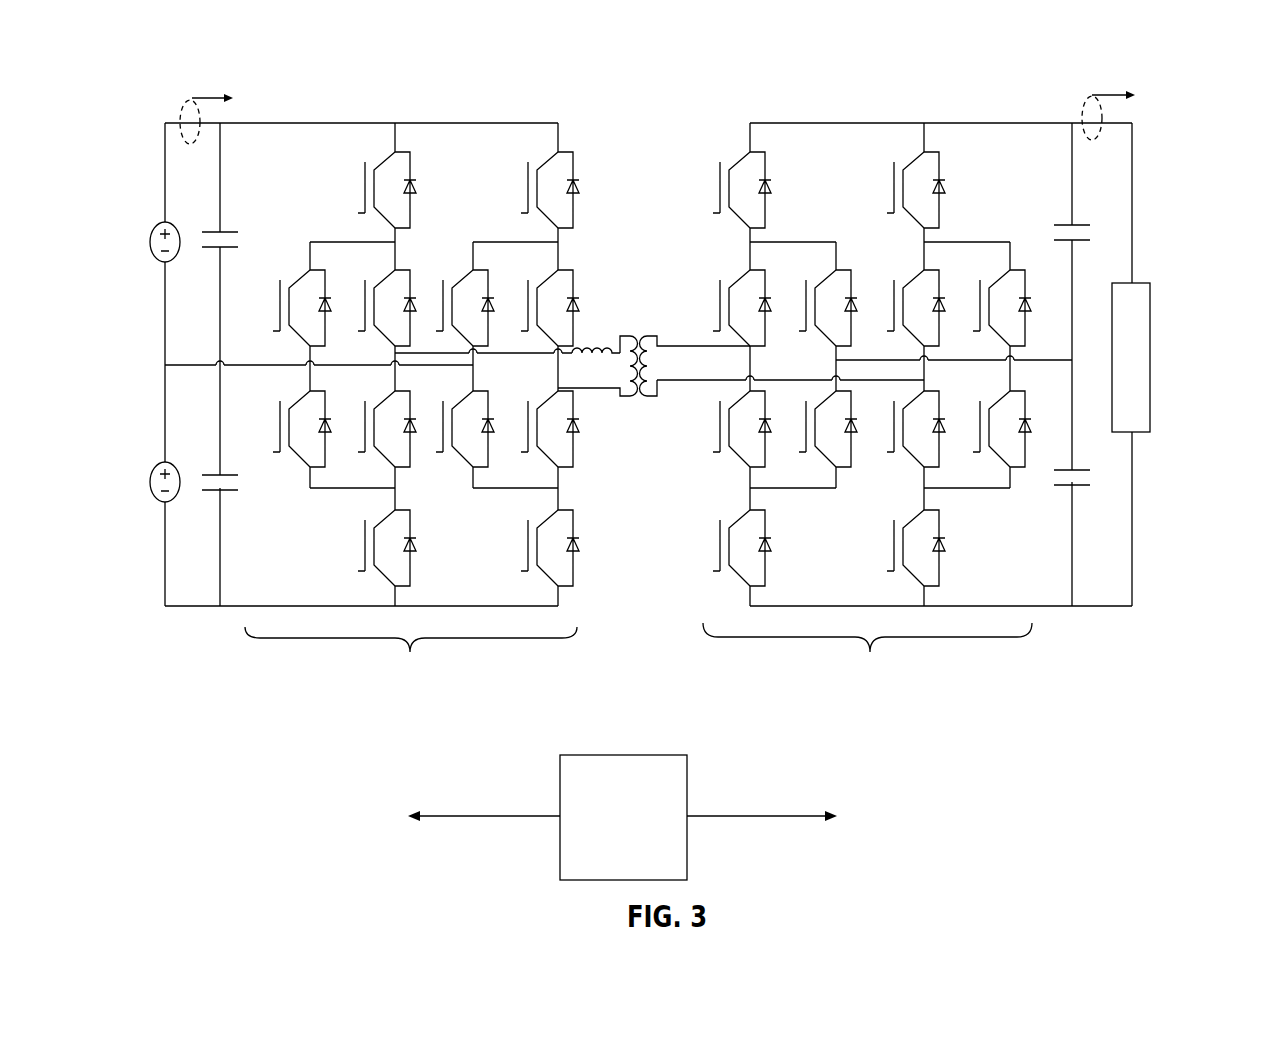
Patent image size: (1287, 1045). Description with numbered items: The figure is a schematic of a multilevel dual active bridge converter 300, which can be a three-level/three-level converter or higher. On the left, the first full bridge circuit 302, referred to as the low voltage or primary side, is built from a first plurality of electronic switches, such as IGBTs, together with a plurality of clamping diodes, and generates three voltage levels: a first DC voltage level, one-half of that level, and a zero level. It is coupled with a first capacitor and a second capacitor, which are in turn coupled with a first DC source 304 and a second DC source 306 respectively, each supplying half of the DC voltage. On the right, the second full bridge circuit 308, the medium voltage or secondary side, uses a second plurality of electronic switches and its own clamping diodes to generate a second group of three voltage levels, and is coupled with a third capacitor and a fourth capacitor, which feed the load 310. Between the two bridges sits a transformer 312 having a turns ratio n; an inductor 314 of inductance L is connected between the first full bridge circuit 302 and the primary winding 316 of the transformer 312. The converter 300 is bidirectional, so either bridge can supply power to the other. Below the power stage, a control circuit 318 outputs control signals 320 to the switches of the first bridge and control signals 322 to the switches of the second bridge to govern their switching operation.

The multilevel dual active bridge converter 300 is at (1198, 78).
The first full bridge circuit 302 is at (403, 406).
The first DC source 304 is at (162, 223).
The second DC source 306 is at (162, 463).
The second full bridge circuit 308 is at (857, 405).
The load 310 is at (1151, 328).
The transformer 312 is at (653, 332).
The inductor 314 is at (597, 347).
The primary winding 316 is at (635, 402).
The control circuit 318 is at (625, 753).
The control signals 320 is at (478, 818).
The control signals 322 is at (762, 817).